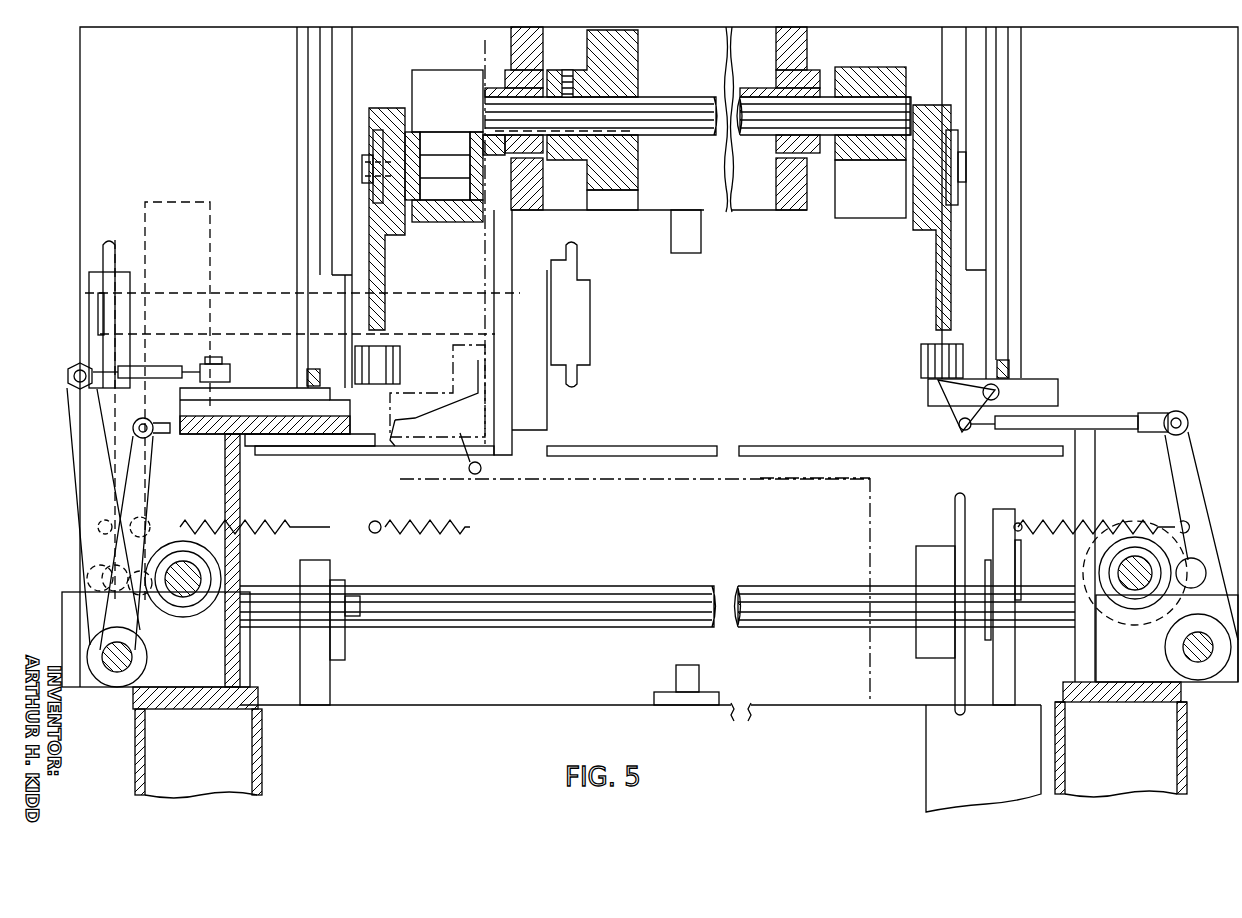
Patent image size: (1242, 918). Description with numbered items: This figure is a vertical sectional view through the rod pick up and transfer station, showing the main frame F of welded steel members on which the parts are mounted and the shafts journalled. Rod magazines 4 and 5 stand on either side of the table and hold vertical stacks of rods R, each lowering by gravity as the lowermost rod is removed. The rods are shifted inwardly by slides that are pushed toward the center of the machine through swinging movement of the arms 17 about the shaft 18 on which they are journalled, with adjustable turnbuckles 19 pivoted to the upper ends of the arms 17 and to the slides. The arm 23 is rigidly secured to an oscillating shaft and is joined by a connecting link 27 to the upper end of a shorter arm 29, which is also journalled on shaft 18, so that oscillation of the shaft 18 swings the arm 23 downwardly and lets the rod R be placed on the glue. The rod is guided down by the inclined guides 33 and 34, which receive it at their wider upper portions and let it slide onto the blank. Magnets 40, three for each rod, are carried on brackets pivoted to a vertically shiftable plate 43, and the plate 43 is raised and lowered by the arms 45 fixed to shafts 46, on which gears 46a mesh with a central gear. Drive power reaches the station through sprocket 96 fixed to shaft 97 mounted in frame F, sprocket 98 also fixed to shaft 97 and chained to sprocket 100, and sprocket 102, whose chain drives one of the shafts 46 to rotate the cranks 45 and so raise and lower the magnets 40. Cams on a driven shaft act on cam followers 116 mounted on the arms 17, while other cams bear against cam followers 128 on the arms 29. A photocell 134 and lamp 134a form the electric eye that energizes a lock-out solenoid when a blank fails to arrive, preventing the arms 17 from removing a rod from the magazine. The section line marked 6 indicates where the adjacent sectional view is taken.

The rod magazine 4 is at (1016, 150).
The rod magazine 5 is at (297, 150).
The section line 6- 6 is at (509, 43).
The arm 17 is at (68, 410).
The shaft 18 is at (132, 660).
The adjustable turnbuckle 19 is at (183, 360).
The arm 23 is at (1003, 395).
The connecting link 27 is at (1118, 416).
The shorter arm 29 is at (150, 470).
The guide 33 is at (367, 436).
The guide 34 is at (408, 445).
The magnet 40 is at (400, 360).
The vertically shiftable plate 43 is at (386, 262).
The arm 45 is at (446, 222).
The shaft 46 is at (697, 136).
The gear 46a is at (610, 200).
The sprocket 96 is at (955, 677).
The shaft 97 is at (710, 628).
The sprocket 98 is at (92, 650).
The sprocket 100 is at (103, 252).
The sprocket 102 is at (577, 378).
The cam follower 116 is at (90, 572).
The cam follower 128 is at (1193, 589).
The photocell 134 is at (699, 678).
The lamp 134a is at (702, 232).
The main frame F is at (807, 273).
The rod R is at (310, 365).